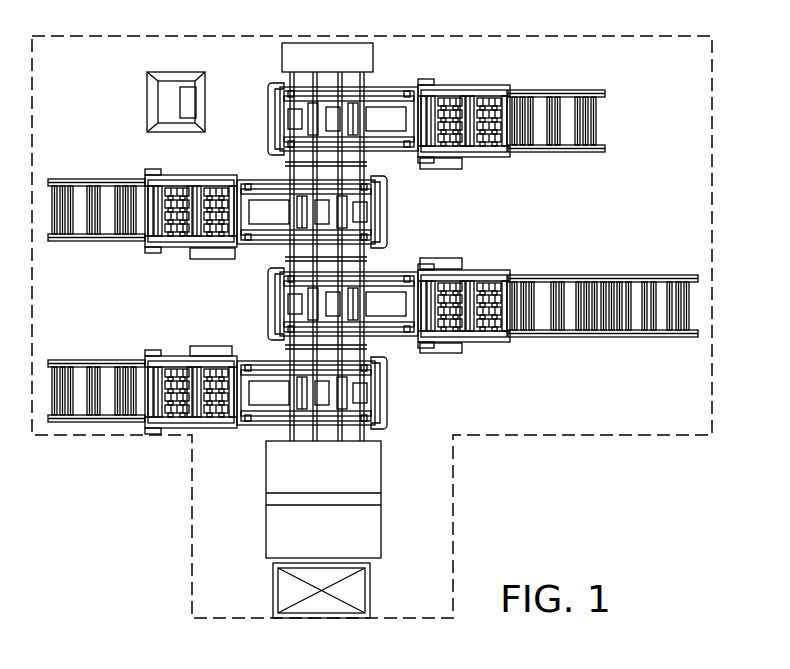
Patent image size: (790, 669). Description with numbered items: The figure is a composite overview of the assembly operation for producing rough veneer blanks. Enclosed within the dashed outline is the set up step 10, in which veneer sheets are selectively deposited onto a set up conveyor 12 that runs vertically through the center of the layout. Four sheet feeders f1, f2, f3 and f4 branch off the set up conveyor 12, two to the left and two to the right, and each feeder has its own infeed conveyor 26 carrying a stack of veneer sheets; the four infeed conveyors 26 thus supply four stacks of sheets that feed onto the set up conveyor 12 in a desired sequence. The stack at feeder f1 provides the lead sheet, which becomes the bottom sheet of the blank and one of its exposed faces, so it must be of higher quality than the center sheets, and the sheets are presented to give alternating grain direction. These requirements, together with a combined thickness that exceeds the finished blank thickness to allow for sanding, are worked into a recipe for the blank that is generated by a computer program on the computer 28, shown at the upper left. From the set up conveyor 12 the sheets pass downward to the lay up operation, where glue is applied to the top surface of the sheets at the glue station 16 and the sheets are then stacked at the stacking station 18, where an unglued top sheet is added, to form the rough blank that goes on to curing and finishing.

The set up step 10 is at (712, 132).
The set up conveyor 12 is at (364, 347).
The glue station 16 is at (266, 480).
The stacking station 18 is at (276, 592).
The infeed conveyor 26 is at (592, 121).
The computer 28 is at (174, 72).
The sheet feeder f1 is at (100, 361).
The sheet feeder f2 is at (592, 276).
The sheet feeder f3 is at (102, 179).
The sheet feeder f4 is at (560, 90).